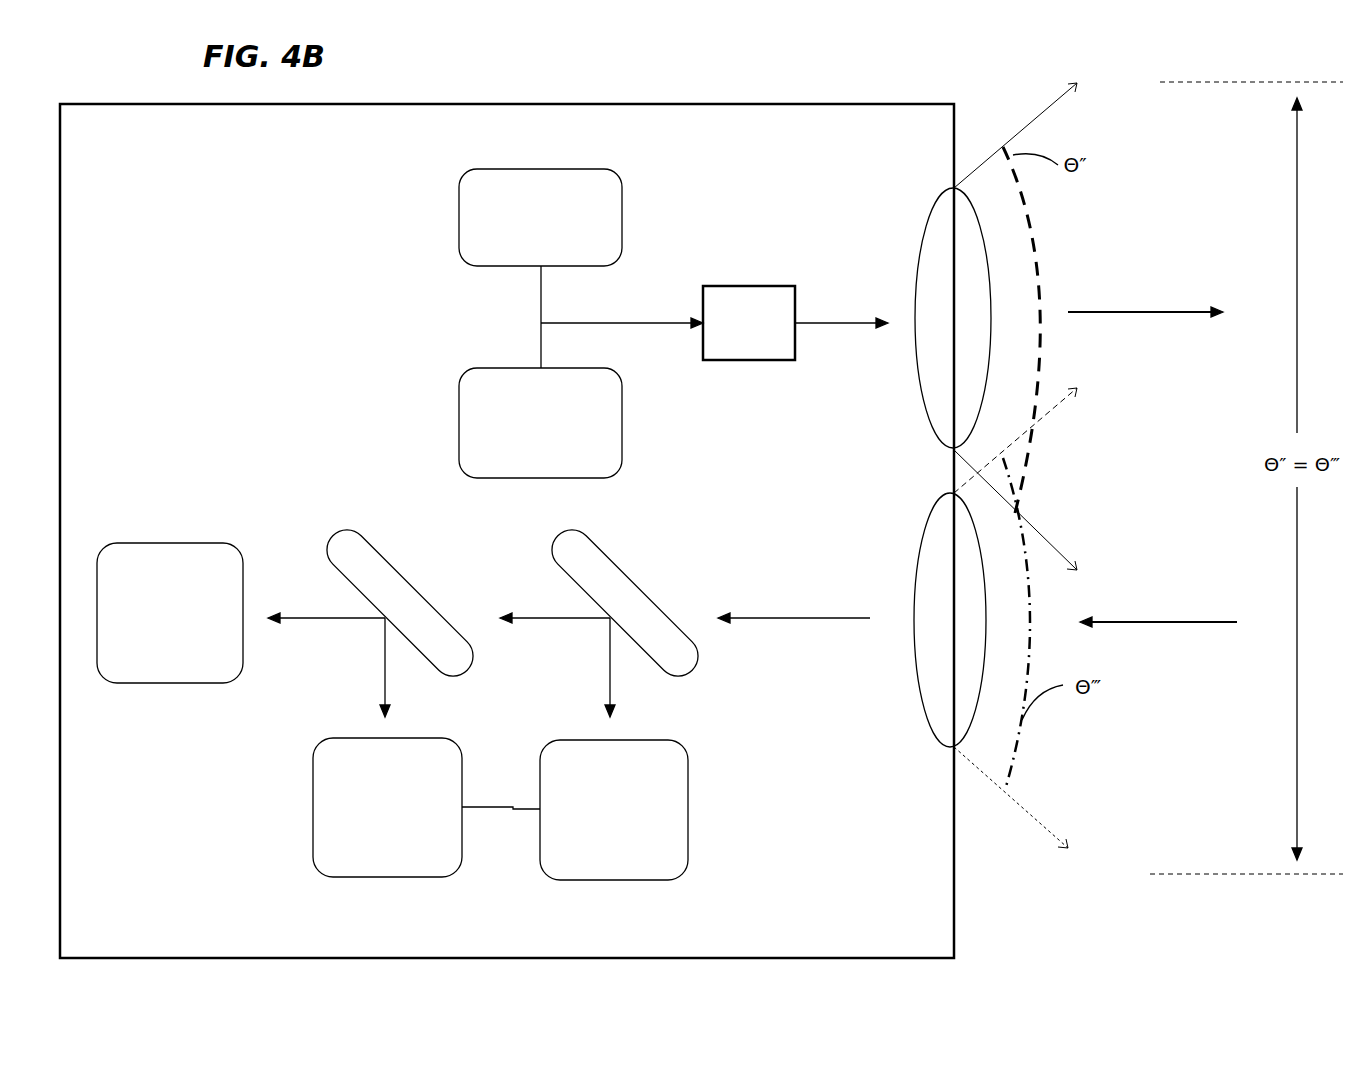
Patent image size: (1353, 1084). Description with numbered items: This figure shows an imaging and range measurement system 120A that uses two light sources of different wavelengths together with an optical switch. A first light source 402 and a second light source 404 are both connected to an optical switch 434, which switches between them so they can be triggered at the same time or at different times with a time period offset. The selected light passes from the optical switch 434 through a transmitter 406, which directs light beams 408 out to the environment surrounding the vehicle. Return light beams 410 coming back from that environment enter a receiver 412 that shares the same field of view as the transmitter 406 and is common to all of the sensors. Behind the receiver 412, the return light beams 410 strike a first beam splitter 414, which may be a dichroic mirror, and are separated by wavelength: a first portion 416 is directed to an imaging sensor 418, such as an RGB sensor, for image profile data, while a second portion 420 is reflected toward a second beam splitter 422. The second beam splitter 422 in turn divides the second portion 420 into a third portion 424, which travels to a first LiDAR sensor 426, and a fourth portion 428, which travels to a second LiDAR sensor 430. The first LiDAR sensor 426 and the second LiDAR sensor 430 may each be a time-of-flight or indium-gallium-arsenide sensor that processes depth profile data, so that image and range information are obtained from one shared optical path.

The imaging and range measurement system 120A is at (252, 227).
The first light source 402 is at (524, 242).
The second light source 404 is at (524, 445).
The optical switch 434 is at (733, 356).
The transmitter 406 is at (918, 260).
The light beams 408 is at (1130, 310).
The return light beams 410 is at (1152, 620).
The receiver 412 is at (918, 553).
The first beam splitter 414 is at (650, 565).
The first portion 416 is at (610, 692).
The imaging sensor 418 is at (597, 844).
The second portion 420 is at (533, 620).
The second beam splitter 422 is at (424, 563).
The third portion 424 is at (392, 695).
The first LiDAR sensor 426 is at (370, 830).
The fourth portion 428 is at (298, 620).
The second LiDAR sensor 430 is at (152, 636).